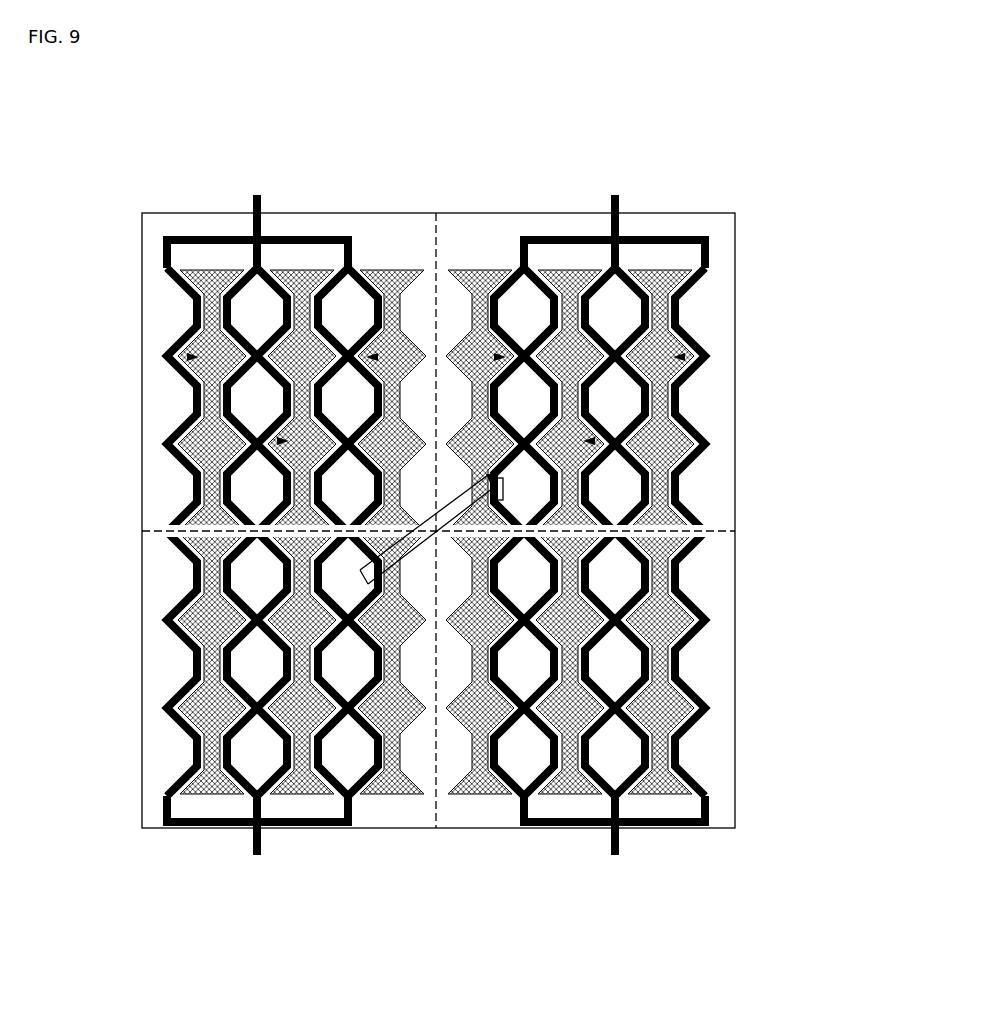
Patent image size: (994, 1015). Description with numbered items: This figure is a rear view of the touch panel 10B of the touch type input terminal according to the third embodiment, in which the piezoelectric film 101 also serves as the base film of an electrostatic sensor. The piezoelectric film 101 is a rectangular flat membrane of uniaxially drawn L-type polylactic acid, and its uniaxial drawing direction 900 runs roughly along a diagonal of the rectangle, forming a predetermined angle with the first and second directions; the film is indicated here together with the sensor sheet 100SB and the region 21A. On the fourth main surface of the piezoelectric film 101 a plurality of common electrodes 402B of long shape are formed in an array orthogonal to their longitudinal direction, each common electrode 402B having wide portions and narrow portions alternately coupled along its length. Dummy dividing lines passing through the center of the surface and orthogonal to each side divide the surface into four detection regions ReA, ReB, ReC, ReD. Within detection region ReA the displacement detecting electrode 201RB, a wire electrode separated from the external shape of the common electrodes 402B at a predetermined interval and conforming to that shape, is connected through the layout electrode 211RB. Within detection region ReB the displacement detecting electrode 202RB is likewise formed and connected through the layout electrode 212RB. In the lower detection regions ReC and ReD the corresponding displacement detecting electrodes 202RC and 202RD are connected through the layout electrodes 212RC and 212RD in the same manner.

The touch panel 10B is at (203, 118).
The sensor substrate 100SB is at (147, 603).
The piezoelectric film 101 is at (150, 658).
The detection region 21A is at (416, 416).
The displacement detecting electrode 202RB is at (181, 268).
The second electrodes in region C 202RC is at (180, 800).
The second electrodes in region D 202RD is at (497, 798).
The displacement detecting electrode 201RB is at (515, 268).
The layout electrode 212RB is at (167, 240).
The second wiring in region C 212RC is at (342, 822).
The second wiring in region D 212RD is at (705, 822).
The layout electrode 211RB is at (705, 240).
The common electrode 402B is at (250, 432).
The uniaxial drawing direction 900 is at (425, 557).
The detection region ReA is at (733, 270).
The detection region ReB is at (143, 262).
The detection region ReC is at (145, 718).
The detection region ReD is at (733, 718).